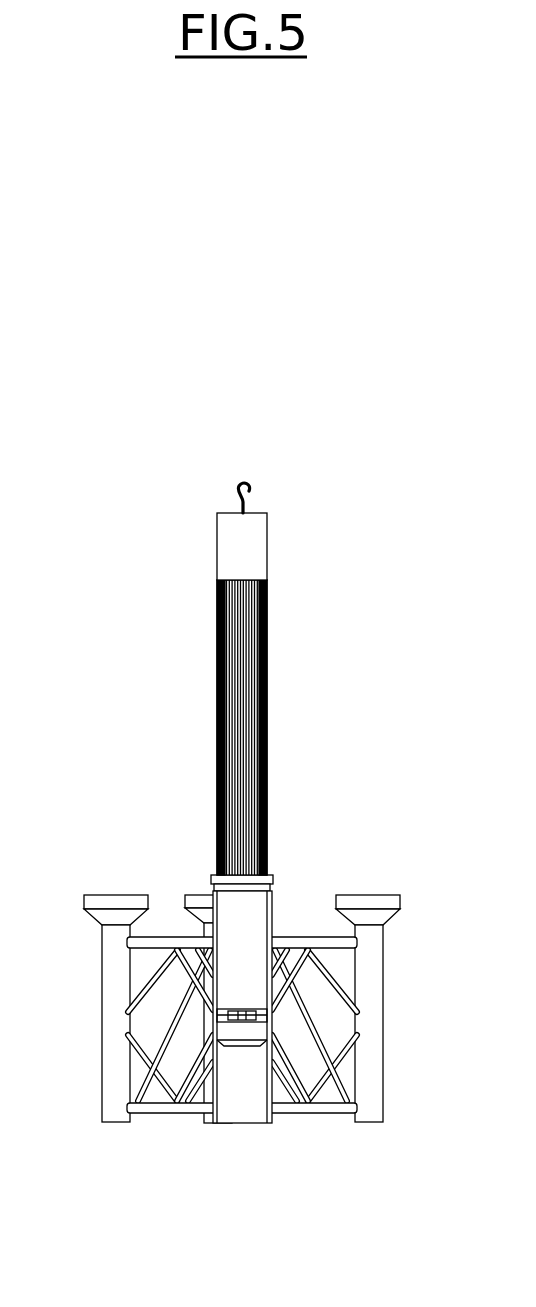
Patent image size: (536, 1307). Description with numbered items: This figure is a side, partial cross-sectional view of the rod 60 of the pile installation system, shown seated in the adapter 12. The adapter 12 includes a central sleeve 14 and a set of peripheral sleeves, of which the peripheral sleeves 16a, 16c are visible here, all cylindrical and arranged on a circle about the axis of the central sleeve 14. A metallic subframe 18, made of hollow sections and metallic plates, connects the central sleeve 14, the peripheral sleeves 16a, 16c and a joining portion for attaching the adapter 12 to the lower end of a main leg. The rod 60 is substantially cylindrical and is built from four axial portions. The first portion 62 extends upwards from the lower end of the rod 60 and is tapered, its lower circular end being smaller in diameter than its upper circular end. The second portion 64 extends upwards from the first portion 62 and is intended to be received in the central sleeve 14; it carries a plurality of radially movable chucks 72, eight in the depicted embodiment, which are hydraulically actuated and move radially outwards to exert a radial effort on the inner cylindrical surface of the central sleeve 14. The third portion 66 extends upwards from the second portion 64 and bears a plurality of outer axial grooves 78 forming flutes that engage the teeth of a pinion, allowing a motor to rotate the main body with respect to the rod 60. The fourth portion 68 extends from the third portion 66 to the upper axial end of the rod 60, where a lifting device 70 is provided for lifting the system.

The adapter 12 is at (246, 1039).
The central sleeve 14 is at (208, 1088).
The peripheral sleeve 16a is at (112, 1022).
The peripheral sleeve 16c is at (373, 1022).
The metallic subframe 18 is at (318, 1045).
The rod 60 is at (241, 678).
The first portion 62 is at (253, 1045).
The second portion 64 is at (280, 1027).
The third portion 66 is at (271, 727).
The fourth portion 68 is at (267, 530).
The lifting device 70 is at (252, 492).
The chucks 72 is at (230, 1022).
The outer axial grooves 78 is at (267, 802).